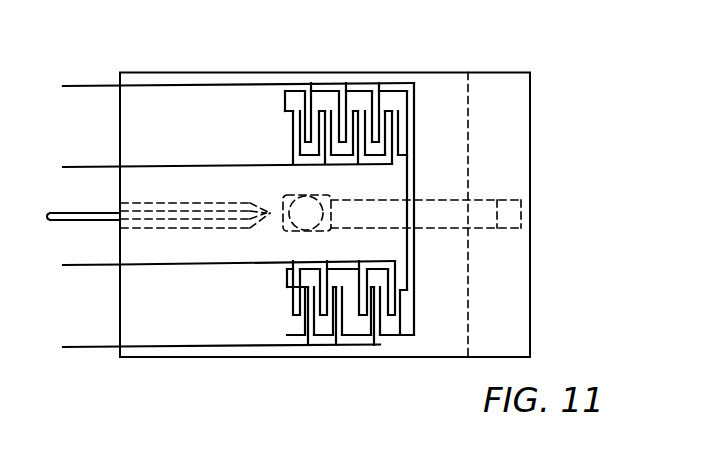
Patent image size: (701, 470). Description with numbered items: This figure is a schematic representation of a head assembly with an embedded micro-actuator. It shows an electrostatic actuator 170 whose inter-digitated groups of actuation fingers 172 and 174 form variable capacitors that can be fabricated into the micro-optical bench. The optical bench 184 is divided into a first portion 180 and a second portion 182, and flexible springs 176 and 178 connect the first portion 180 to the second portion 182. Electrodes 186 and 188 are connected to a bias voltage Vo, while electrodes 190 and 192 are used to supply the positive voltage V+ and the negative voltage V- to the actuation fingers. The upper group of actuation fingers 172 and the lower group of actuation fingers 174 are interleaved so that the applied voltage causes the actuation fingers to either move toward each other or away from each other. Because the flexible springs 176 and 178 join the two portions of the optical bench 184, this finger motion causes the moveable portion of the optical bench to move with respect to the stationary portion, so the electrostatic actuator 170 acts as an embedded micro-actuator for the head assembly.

The electrostatic actuator 170 is at (414, 58).
The actuation fingers 172 is at (270, 130).
The actuation fingers 174 is at (264, 300).
The flexible spring 176 is at (387, 72).
The flexible spring 178 is at (332, 357).
The first portion 180 is at (120, 128).
The second portion 182 is at (512, 145).
The optical bench 184 is at (566, 86).
The electrode 186 is at (88, 84).
The electrode 188 is at (92, 350).
The electrode 190 is at (91, 172).
The electrode 192 is at (93, 268).